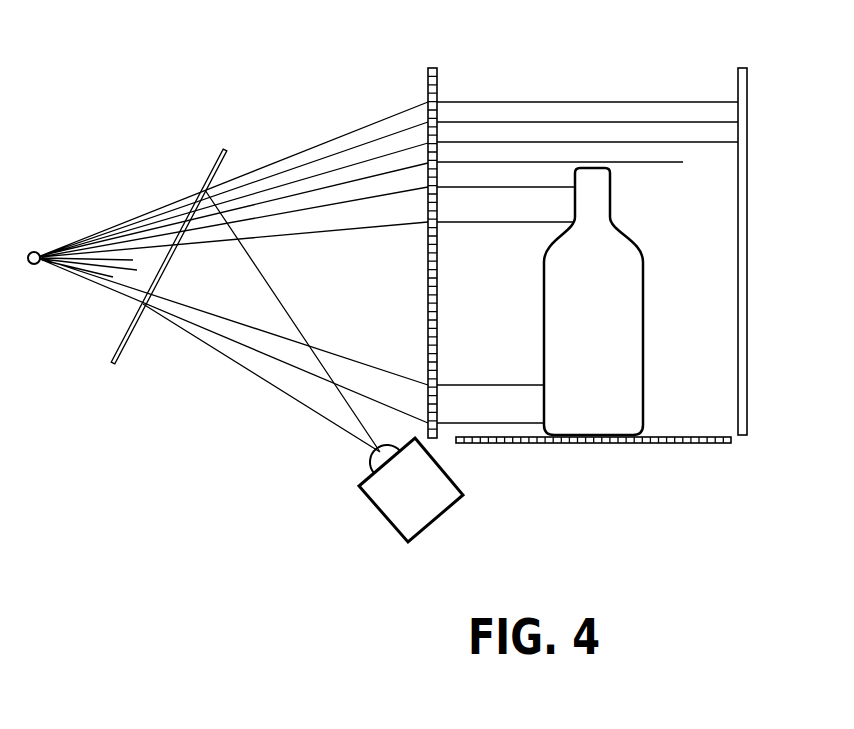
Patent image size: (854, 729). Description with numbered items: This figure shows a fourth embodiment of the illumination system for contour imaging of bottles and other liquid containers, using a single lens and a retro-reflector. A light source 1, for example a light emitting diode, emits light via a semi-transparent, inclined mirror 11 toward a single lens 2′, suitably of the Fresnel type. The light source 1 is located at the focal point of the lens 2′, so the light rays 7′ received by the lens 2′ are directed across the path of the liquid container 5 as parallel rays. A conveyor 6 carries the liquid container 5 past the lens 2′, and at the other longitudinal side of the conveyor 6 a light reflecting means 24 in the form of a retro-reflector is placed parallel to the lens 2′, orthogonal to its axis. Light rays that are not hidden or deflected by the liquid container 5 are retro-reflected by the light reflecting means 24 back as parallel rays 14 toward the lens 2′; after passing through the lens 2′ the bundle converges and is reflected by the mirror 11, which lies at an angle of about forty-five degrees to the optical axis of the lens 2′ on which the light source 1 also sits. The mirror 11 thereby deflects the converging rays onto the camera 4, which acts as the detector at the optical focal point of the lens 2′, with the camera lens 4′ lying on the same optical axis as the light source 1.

The light source 1 is at (33, 251).
The semi-transparent inclined mirror 11 is at (116, 351).
The light rays 7′ is at (293, 148).
The camera lens 4′ is at (373, 465).
The camera 4 is at (435, 503).
The single lens 2′ is at (437, 133).
The parallel rays 14 is at (560, 90).
The light reflecting means 24 is at (748, 187).
The liquid container 5 is at (643, 344).
The conveyor 6 is at (672, 444).